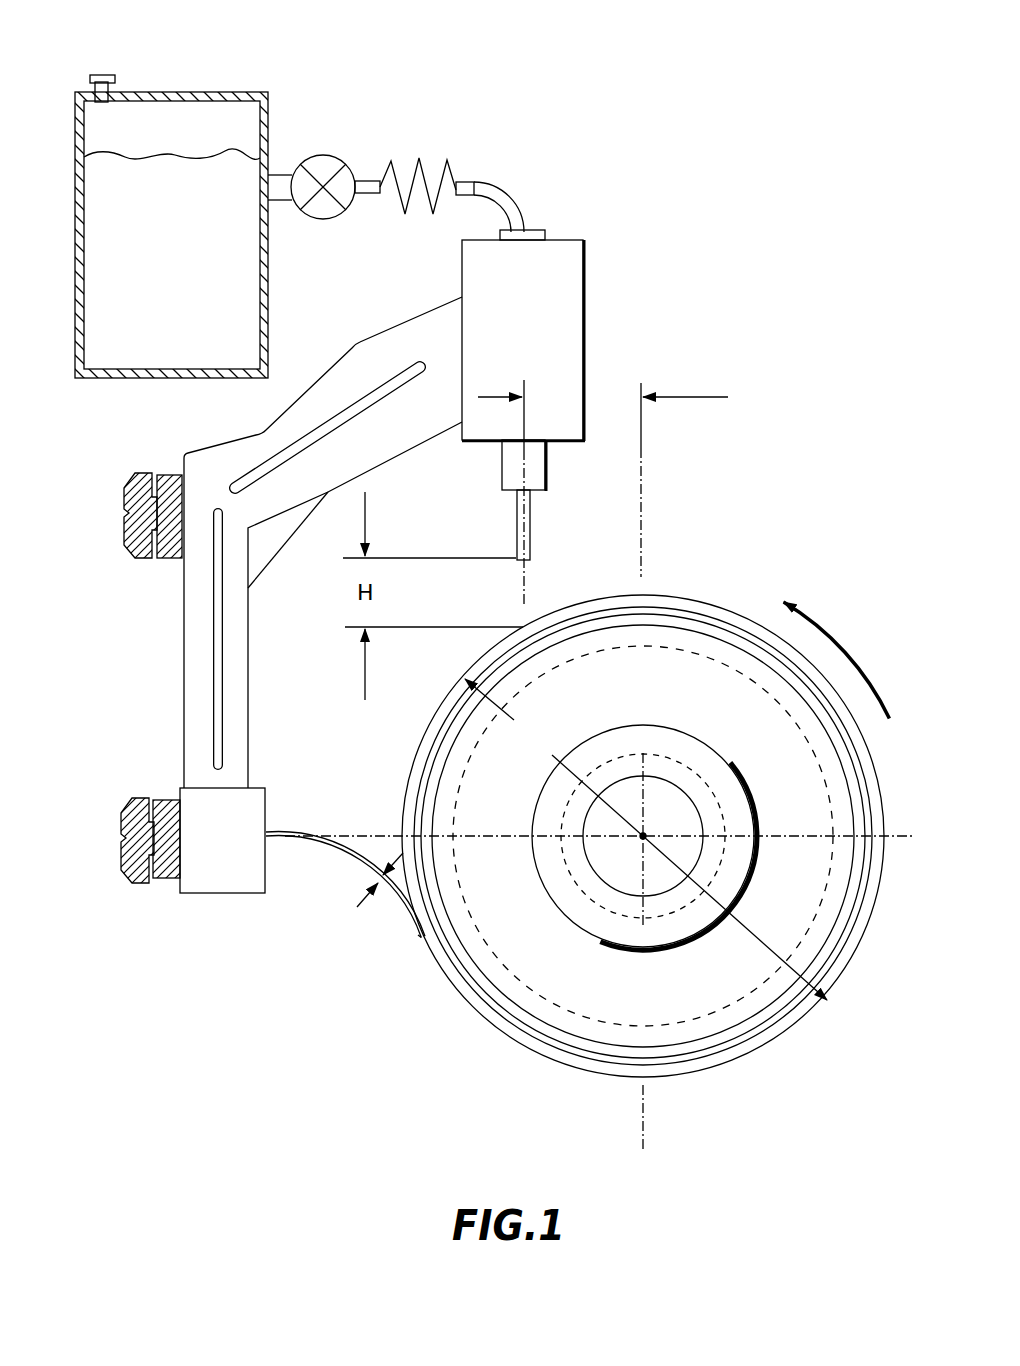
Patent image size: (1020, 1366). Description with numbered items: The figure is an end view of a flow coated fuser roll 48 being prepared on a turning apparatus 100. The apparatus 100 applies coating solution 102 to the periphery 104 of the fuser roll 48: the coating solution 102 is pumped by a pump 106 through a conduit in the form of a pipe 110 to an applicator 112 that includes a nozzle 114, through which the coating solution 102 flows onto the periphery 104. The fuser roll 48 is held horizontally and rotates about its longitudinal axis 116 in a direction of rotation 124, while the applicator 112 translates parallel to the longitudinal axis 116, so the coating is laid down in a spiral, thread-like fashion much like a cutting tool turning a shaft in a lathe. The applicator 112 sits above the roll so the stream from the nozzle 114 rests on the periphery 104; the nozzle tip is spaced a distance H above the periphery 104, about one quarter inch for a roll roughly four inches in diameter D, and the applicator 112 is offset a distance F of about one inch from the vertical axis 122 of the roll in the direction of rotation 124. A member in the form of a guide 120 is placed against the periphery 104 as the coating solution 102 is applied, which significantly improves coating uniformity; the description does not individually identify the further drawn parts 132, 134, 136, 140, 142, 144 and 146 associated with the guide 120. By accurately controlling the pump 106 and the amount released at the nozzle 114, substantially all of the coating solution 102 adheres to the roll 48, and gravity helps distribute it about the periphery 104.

The apparatus 100 is at (768, 150).
The coating solution 102 is at (207, 157).
The periphery 104 is at (727, 607).
The pump 106 is at (320, 163).
The pipe 110 is at (493, 190).
The applicator 112 is at (578, 303).
The nozzle 114 is at (547, 537).
The longitudinal axis 116 is at (643, 836).
The guide 120 is at (287, 775).
The vertical axis 122 is at (643, 505).
The direction of rotation 124 is at (819, 627).
The blade 132 is at (305, 834).
The clamp bar 134 is at (170, 550).
The fastener 136 is at (127, 537).
The blade edge 140 is at (365, 862).
The mounting block 142 is at (268, 840).
The support column 144 is at (234, 788).
The blade tip 146 is at (423, 942).
The fuser roll 48 is at (810, 1030).